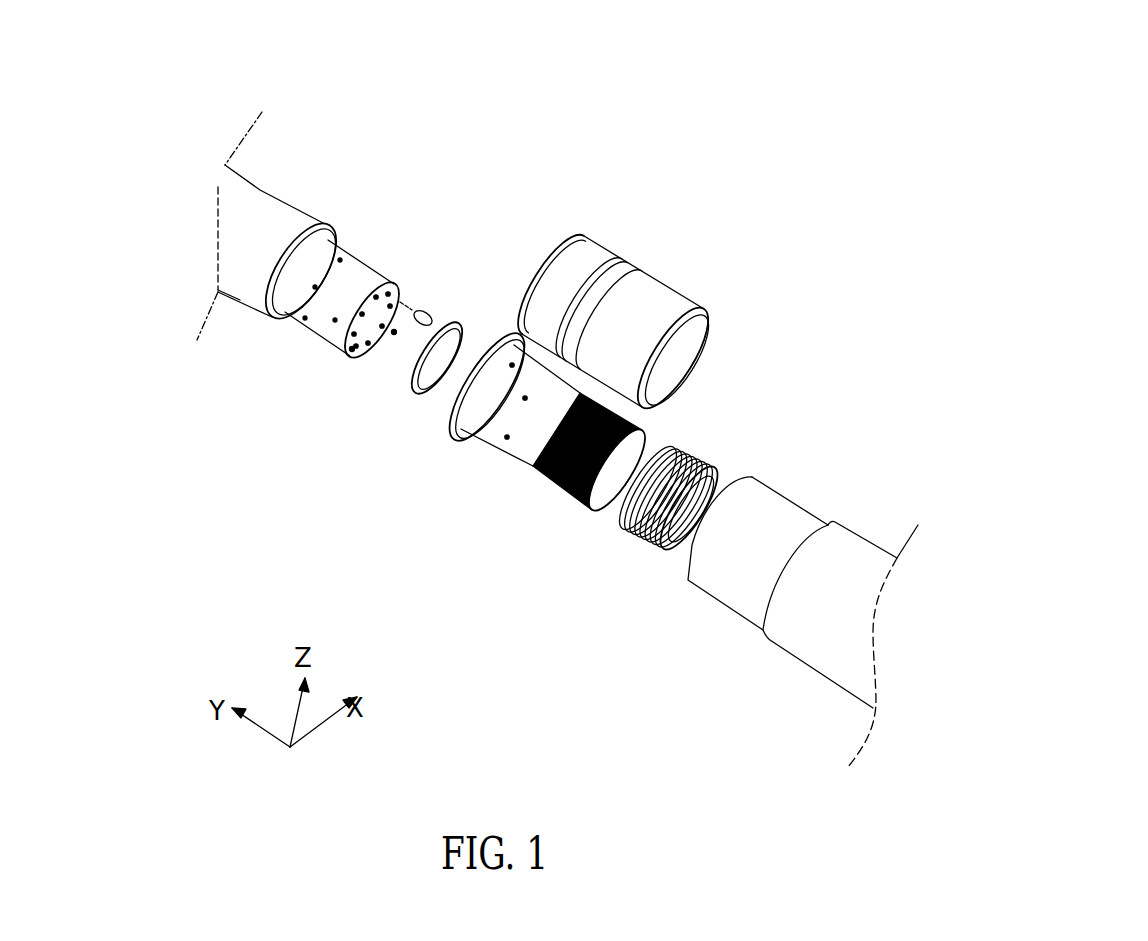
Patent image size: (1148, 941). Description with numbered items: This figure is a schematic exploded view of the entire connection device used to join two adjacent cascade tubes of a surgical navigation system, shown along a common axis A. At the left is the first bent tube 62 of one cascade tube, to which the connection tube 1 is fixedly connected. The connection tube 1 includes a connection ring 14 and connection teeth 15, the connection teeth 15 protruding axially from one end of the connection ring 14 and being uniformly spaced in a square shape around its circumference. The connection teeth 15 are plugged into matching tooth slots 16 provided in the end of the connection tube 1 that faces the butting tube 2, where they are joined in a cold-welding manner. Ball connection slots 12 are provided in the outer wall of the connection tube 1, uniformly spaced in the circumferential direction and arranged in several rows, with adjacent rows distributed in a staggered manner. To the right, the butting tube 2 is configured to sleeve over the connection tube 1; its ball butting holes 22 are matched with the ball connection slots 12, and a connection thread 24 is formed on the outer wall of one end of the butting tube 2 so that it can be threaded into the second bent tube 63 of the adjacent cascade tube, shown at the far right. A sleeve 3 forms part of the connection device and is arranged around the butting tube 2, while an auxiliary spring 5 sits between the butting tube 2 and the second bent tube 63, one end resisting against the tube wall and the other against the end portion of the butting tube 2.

The connection tube 1 is at (291, 259).
The ball connection slots 12 is at (352, 290).
The connection ring 14 is at (407, 370).
The connection teeth 15 is at (393, 333).
The tooth slots 16 is at (352, 348).
The butting tube 2 is at (654, 411).
The ball butting holes 22 is at (525, 397).
The connection thread 24 is at (477, 350).
The sleeve 3 is at (627, 323).
The auxiliary spring 5 is at (713, 472).
The first bent tube 62 is at (247, 287).
The second bent tube 63 is at (730, 557).
The rotation axis A is at (405, 305).